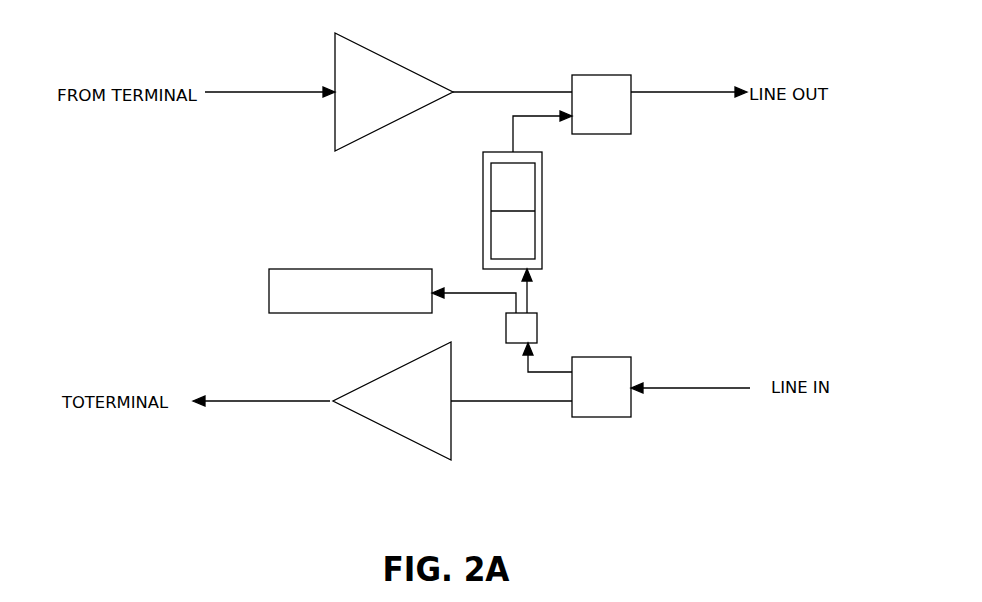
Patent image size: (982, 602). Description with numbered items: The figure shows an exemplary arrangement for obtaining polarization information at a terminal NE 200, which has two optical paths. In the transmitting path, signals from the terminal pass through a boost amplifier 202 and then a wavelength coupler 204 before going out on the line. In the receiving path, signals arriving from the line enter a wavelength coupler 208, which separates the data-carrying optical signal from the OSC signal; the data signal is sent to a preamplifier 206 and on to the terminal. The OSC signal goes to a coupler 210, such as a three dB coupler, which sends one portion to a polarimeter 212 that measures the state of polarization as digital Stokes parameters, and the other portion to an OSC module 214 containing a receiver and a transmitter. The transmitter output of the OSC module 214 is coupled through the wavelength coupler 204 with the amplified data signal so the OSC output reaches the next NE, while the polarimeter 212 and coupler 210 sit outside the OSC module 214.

The terminal NE 200 is at (447, 521).
The boost amplifier 202 is at (390, 58).
The wavelength coupler 204 is at (595, 75).
The preamplifier 206 is at (388, 433).
The wavelength coupler 208 is at (595, 417).
The coupler 210 is at (537, 333).
The polarimeter 212 is at (355, 269).
The OSC module 214 is at (542, 233).